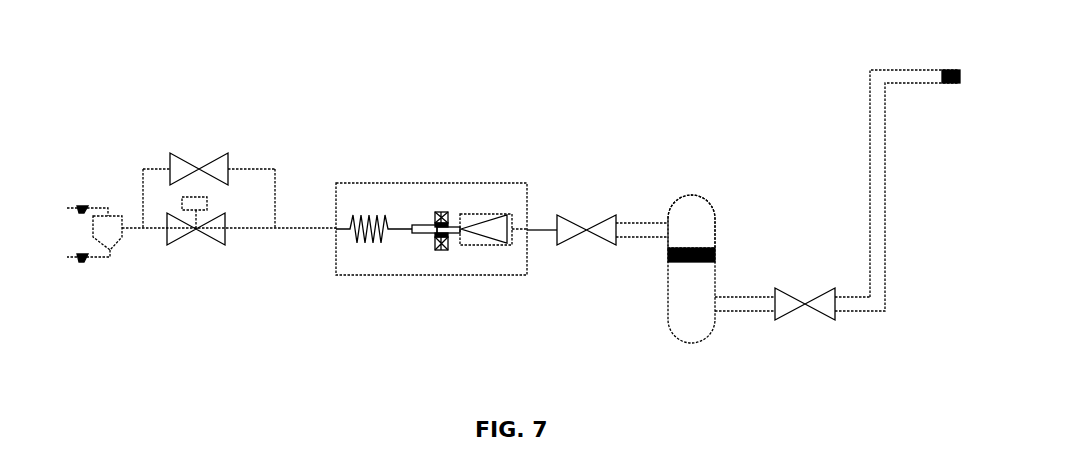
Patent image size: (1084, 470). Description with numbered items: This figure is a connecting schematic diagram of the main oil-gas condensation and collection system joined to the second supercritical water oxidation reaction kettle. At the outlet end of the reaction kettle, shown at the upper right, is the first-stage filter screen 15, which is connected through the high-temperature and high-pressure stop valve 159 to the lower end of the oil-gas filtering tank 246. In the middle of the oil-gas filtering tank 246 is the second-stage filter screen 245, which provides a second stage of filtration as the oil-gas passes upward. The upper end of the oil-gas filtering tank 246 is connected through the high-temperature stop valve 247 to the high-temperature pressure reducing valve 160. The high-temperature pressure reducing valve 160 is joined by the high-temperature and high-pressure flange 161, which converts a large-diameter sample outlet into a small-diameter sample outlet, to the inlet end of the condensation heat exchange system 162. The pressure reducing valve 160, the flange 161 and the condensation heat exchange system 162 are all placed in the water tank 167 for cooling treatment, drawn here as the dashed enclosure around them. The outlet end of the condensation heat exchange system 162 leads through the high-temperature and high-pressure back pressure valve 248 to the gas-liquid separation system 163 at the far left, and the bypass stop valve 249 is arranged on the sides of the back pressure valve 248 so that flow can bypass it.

The first-stage filter screen 15 is at (952, 72).
The high-temperature and high-pressure stop valve 159 is at (812, 297).
The high-temperature pressure reducing valve 160 is at (492, 210).
The high-temperature and high-pressure flange 161 is at (438, 212).
The condensation heat exchange system 162 is at (375, 213).
The gas-liquid separation system 163 is at (108, 207).
The water tank 167 is at (408, 263).
The second-stage filter screen 245 is at (673, 222).
The oil-gas filtering tank 246 is at (680, 293).
The high-temperature stop valve 247 is at (592, 227).
The high-temperature and high-pressure back pressure valve 248 is at (207, 230).
The bypass stop valve 249 is at (198, 167).